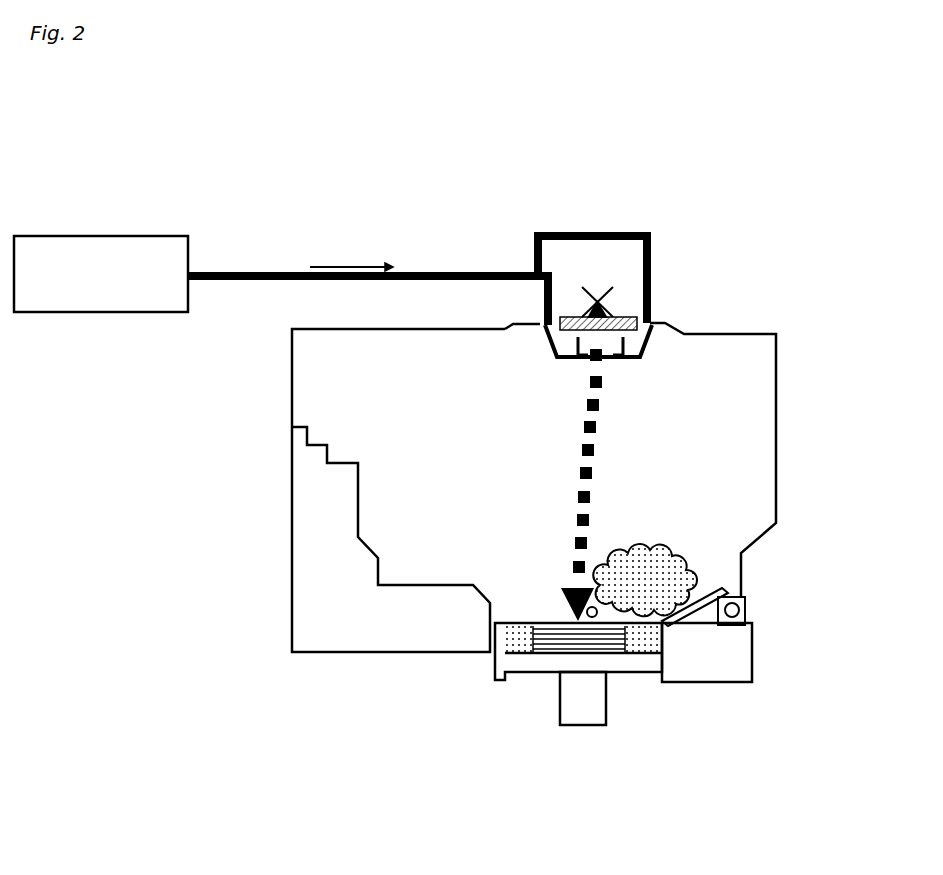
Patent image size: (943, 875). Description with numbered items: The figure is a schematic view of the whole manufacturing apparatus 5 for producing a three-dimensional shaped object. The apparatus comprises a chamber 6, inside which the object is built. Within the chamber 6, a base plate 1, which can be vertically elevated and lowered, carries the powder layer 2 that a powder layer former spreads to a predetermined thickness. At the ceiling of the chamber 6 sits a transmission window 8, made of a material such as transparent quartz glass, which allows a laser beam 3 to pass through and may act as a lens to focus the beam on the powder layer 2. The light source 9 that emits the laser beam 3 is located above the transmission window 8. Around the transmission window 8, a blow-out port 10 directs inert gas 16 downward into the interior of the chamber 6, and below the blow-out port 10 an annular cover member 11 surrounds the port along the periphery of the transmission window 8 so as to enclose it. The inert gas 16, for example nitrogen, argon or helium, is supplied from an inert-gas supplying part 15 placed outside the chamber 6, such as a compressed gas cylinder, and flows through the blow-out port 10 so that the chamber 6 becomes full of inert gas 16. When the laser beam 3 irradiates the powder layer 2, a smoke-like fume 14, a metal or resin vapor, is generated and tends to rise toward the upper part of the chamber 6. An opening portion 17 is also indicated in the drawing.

The base plate 1 is at (557, 662).
The powder layer 2 is at (645, 637).
The laser beam 3 is at (598, 497).
The manufacturing apparatus 5 is at (766, 298).
The chamber 6 is at (777, 420).
The transmission window 8 is at (632, 318).
The light source 9 is at (596, 302).
The blow-out port 10 is at (542, 337).
The cover member 11 is at (547, 365).
The fume 14 is at (683, 572).
The inert-gas supplying part 15 is at (170, 236).
The inert gas 16 is at (352, 265).
The opening portion 17 is at (607, 362).